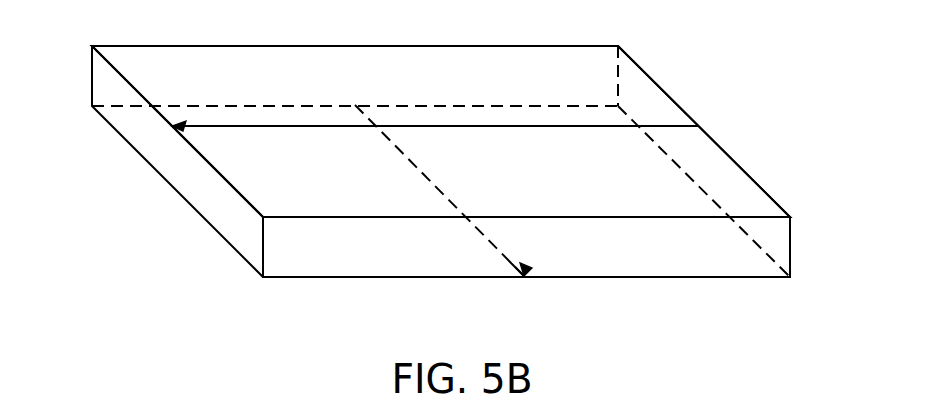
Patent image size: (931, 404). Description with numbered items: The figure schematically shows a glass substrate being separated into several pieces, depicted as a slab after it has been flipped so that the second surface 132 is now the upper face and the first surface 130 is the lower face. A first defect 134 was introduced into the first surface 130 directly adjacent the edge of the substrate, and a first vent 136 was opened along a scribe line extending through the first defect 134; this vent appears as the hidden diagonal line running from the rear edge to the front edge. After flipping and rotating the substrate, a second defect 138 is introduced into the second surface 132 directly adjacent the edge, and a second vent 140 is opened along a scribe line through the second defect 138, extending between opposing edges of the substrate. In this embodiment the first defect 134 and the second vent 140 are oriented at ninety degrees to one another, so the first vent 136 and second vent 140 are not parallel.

The first surface 130 is at (650, 278).
The second surface 132 is at (590, 188).
The first defect 134 is at (527, 270).
The first vent 136 is at (482, 238).
The second defect 138 is at (176, 124).
The second vent 140 is at (305, 128).